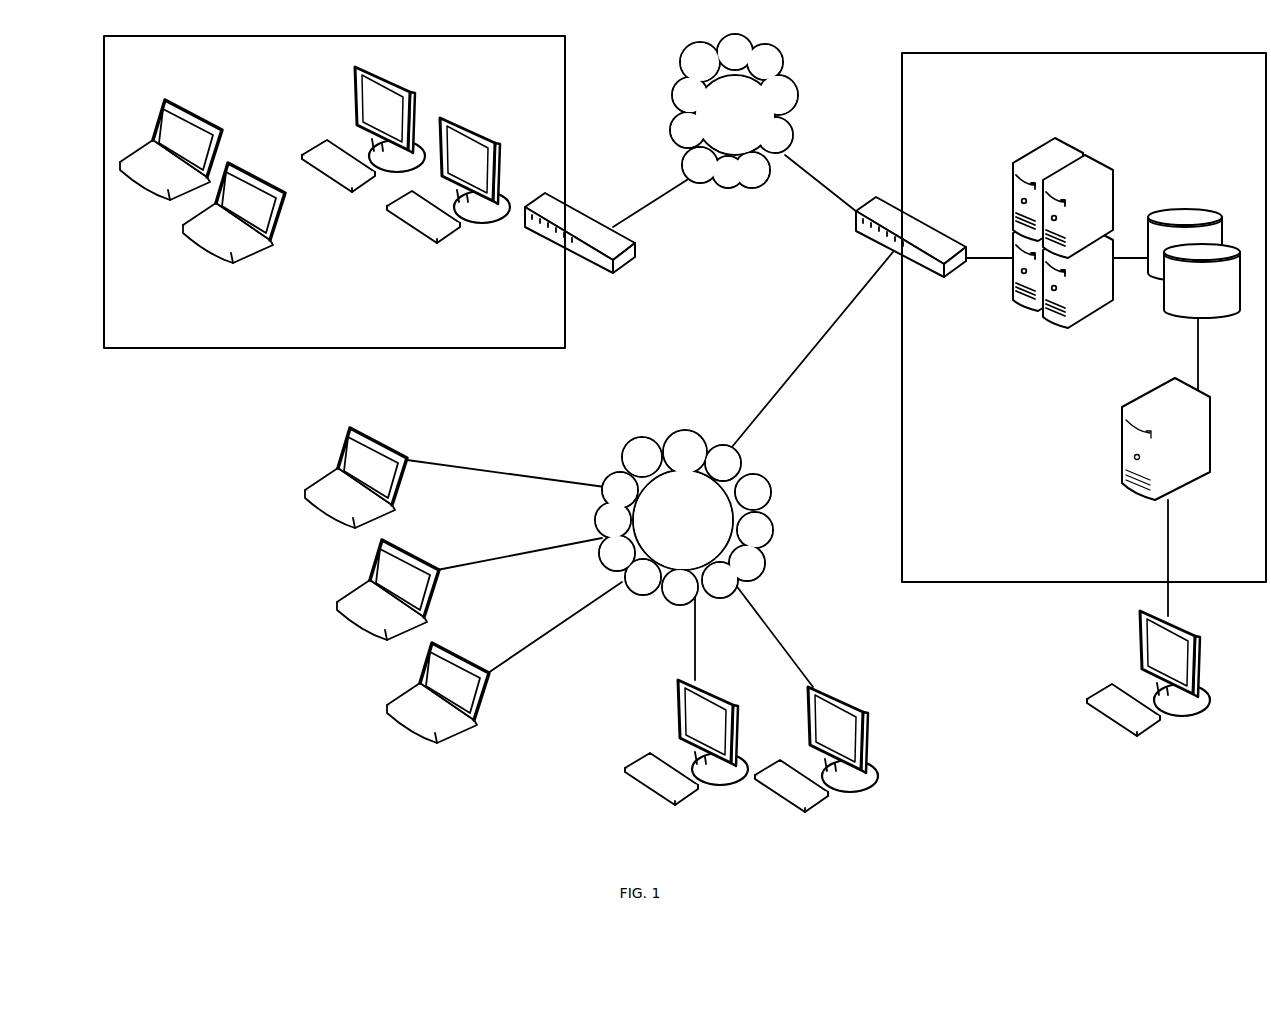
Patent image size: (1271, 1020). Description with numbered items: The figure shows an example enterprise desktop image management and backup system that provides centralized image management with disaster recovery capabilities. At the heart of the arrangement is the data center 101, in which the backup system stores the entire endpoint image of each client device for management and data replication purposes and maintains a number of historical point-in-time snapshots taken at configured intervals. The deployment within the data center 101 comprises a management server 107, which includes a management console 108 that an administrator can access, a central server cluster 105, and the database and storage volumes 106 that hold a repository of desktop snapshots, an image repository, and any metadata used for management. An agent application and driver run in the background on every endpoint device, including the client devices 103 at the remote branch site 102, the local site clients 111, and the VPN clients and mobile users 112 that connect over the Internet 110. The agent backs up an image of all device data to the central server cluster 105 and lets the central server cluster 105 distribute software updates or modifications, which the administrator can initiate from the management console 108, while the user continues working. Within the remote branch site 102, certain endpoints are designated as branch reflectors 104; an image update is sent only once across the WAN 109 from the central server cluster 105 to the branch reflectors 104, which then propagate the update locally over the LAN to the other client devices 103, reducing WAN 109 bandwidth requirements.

The data center 101 is at (1084, 317).
The remote branch site 102 is at (334, 192).
The client devices 103 is at (202, 196).
The branch reflectors 104 is at (406, 176).
The central server cluster 105 is at (1061, 252).
The database and storage volumes 106 is at (1194, 232).
The management server 107 is at (1127, 456).
The management console 108 is at (1148, 697).
The wide area network (WAN) 109 is at (734, 111).
The Internet 110 is at (684, 517).
The local site clients 111 is at (751, 758).
The VPN clients and mobile users 112 is at (343, 585).